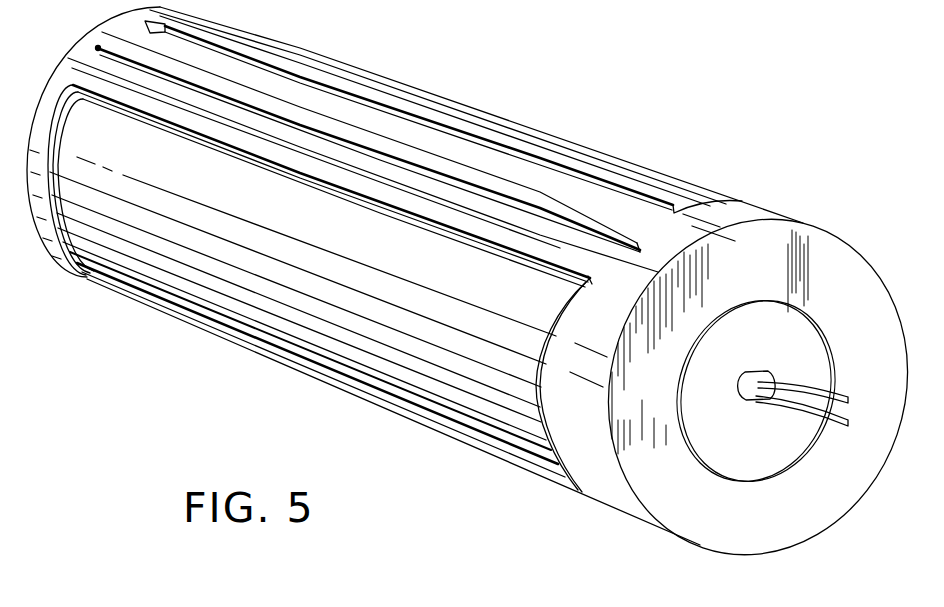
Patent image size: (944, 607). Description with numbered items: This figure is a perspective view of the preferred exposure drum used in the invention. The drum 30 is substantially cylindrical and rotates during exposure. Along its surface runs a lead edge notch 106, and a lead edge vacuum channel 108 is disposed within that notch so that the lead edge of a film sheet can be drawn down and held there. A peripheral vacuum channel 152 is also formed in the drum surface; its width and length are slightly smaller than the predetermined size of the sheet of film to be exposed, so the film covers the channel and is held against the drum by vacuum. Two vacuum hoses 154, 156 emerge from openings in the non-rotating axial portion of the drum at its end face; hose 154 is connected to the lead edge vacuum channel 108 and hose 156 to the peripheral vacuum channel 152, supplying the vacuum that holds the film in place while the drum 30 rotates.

The drum 30 is at (722, 153).
The lead edge notch 106 is at (557, 203).
The lead edge vacuum channel 108 is at (580, 220).
The peripheral vacuum channel 152 is at (258, 63).
The vacuum hose 154 is at (838, 391).
The vacuum hose 156 is at (837, 431).